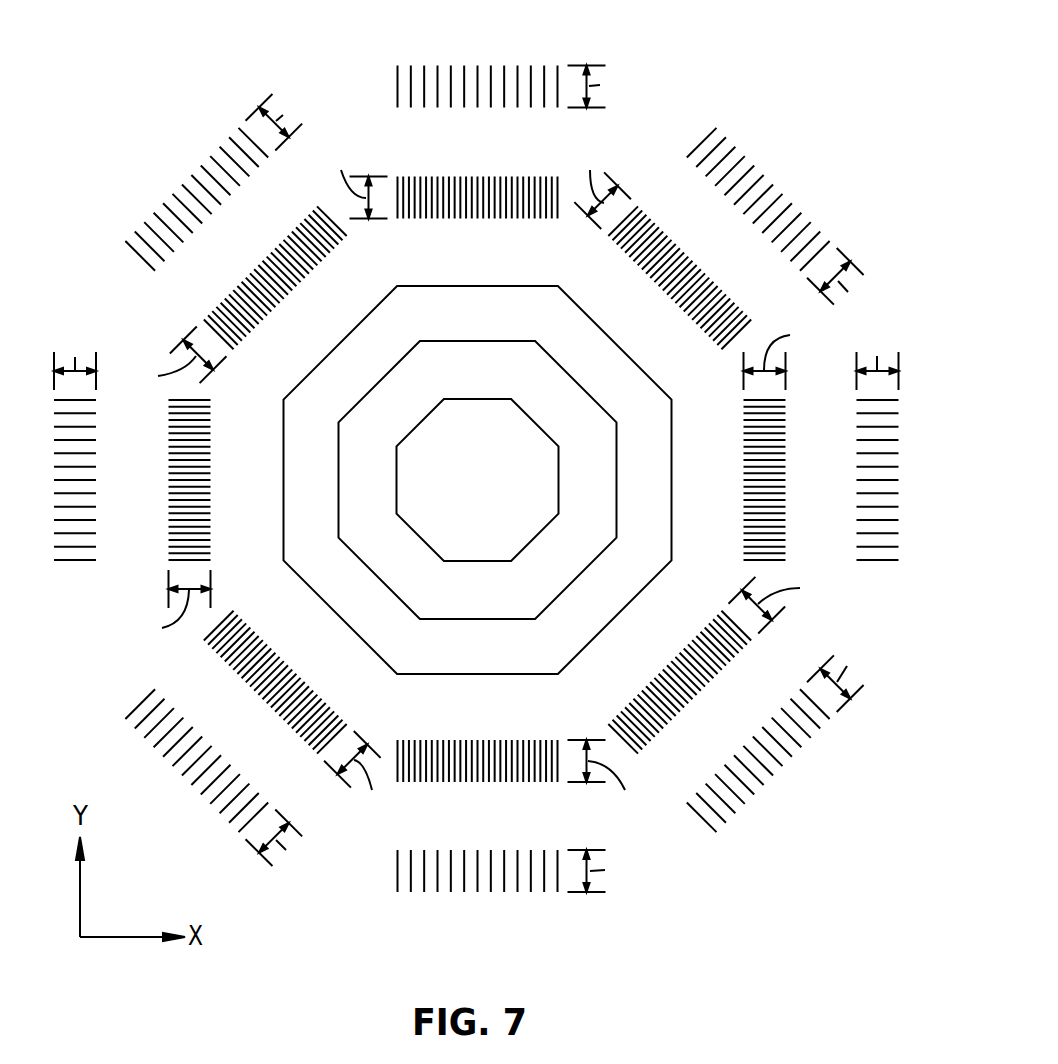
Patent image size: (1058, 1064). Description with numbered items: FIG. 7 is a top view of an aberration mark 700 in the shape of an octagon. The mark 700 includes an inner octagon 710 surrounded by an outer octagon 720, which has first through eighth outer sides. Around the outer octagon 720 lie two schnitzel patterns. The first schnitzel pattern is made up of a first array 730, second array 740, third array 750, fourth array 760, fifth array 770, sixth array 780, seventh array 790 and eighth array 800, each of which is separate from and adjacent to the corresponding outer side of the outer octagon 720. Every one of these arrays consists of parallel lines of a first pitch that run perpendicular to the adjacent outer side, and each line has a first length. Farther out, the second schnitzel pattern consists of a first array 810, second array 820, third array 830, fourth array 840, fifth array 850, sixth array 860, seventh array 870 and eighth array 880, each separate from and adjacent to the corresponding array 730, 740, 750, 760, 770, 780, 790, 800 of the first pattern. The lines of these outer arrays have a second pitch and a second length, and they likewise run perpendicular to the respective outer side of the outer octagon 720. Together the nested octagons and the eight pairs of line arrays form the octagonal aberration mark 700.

The mark 700 is at (757, 82).
The inner octagon 710 is at (548, 413).
The outer octagon 720 is at (616, 345).
The first array 730 is at (517, 177).
The second array 740 is at (692, 263).
The third array 750 is at (743, 466).
The fourth array 760 is at (687, 703).
The fifth array 770 is at (512, 782).
The sixth array 780 is at (265, 702).
The seventh array 790 is at (211, 446).
The eighth array 800 is at (258, 263).
The first array 810 is at (503, 73).
The second array 820 is at (762, 178).
The third array 830 is at (856, 466).
The fourth array 840 is at (767, 783).
The fifth array 850 is at (506, 892).
The sixth array 860 is at (200, 788).
The seventh array 870 is at (97, 440).
The eighth array 880 is at (198, 168).